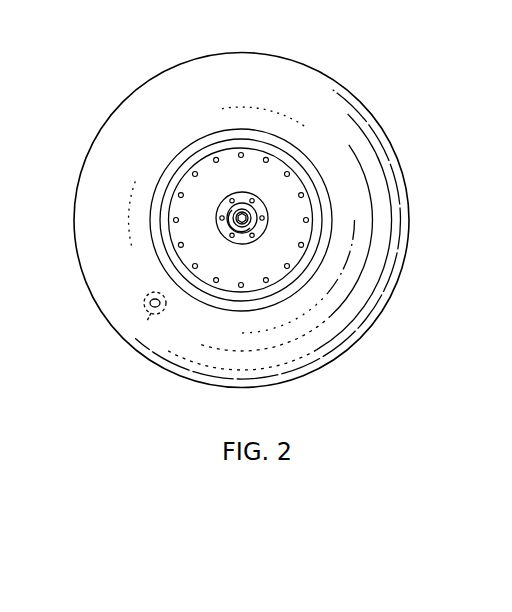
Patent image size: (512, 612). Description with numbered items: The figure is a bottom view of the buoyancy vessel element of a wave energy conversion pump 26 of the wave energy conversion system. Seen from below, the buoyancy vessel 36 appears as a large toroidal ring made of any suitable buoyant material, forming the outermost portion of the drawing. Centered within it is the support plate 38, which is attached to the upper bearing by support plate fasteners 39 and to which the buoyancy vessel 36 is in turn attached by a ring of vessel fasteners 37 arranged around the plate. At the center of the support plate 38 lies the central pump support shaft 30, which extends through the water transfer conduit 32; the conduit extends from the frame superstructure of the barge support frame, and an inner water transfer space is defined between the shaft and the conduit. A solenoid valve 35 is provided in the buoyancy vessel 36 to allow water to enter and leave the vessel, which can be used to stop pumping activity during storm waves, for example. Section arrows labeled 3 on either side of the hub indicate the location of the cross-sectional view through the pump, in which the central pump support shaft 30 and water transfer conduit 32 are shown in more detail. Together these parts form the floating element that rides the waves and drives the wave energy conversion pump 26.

The wave energy conversion pump 26 is at (396, 76).
The central pump support shaft 30 is at (233, 212).
The water transfer conduit 32 is at (243, 203).
The solenoid valve 35 is at (149, 318).
The buoyancy vessel 36 is at (220, 70).
The vessel fasteners 37 is at (243, 152).
The support plate 38 is at (305, 207).
The support plate fasteners 39 is at (252, 243).
The section line for FIG. 3 is at (205, 218).